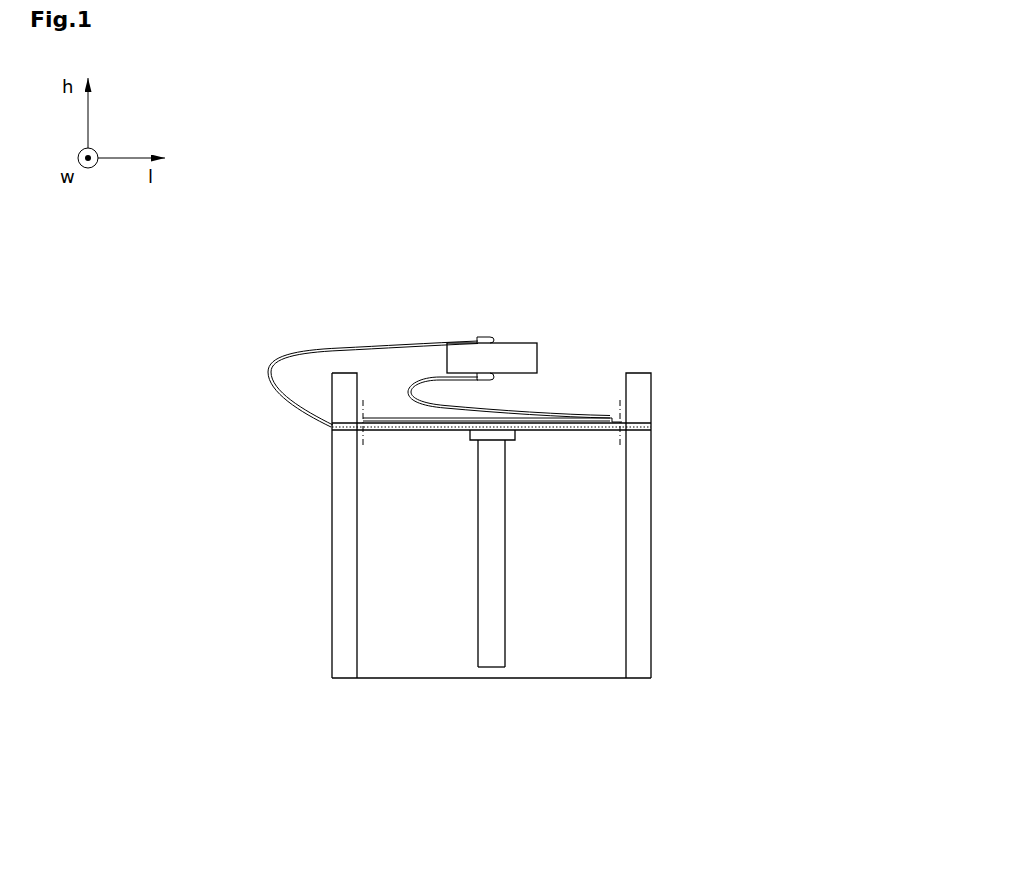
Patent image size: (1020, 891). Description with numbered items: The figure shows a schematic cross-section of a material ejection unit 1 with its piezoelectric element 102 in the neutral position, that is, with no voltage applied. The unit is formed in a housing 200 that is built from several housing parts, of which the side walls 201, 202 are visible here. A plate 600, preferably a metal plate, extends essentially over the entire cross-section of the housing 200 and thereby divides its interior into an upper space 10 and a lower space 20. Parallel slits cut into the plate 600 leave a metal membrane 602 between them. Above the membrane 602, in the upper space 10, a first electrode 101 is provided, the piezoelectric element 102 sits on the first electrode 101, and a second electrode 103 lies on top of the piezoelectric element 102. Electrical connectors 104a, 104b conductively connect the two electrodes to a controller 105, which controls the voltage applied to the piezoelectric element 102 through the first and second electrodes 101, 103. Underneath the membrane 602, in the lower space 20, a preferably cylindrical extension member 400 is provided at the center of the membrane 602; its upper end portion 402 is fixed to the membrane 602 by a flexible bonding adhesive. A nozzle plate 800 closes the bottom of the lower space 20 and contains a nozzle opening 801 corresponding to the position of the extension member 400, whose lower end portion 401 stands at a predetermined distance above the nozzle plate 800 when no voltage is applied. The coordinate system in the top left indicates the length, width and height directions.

The material ejection unit 1 is at (622, 234).
The upper space 10 is at (368, 383).
The lower space 20 is at (362, 466).
The first electrode 101 is at (647, 427).
The piezoelectric element 102 is at (612, 415).
The second electrode 103 is at (598, 410).
The electrical connector 104a is at (403, 345).
The electrical connector 104b is at (545, 413).
The controller 105 is at (515, 348).
The housing 200 is at (813, 667).
The side wall 201 is at (647, 410).
The side wall 202 is at (652, 615).
The extension member 400 is at (480, 548).
The lower end portion 401 is at (482, 661).
The upper end portion 402 is at (468, 437).
The plate 600 is at (650, 433).
The membrane 602 is at (605, 436).
The nozzle plate 800 is at (560, 680).
The nozzle opening 801 is at (490, 679).